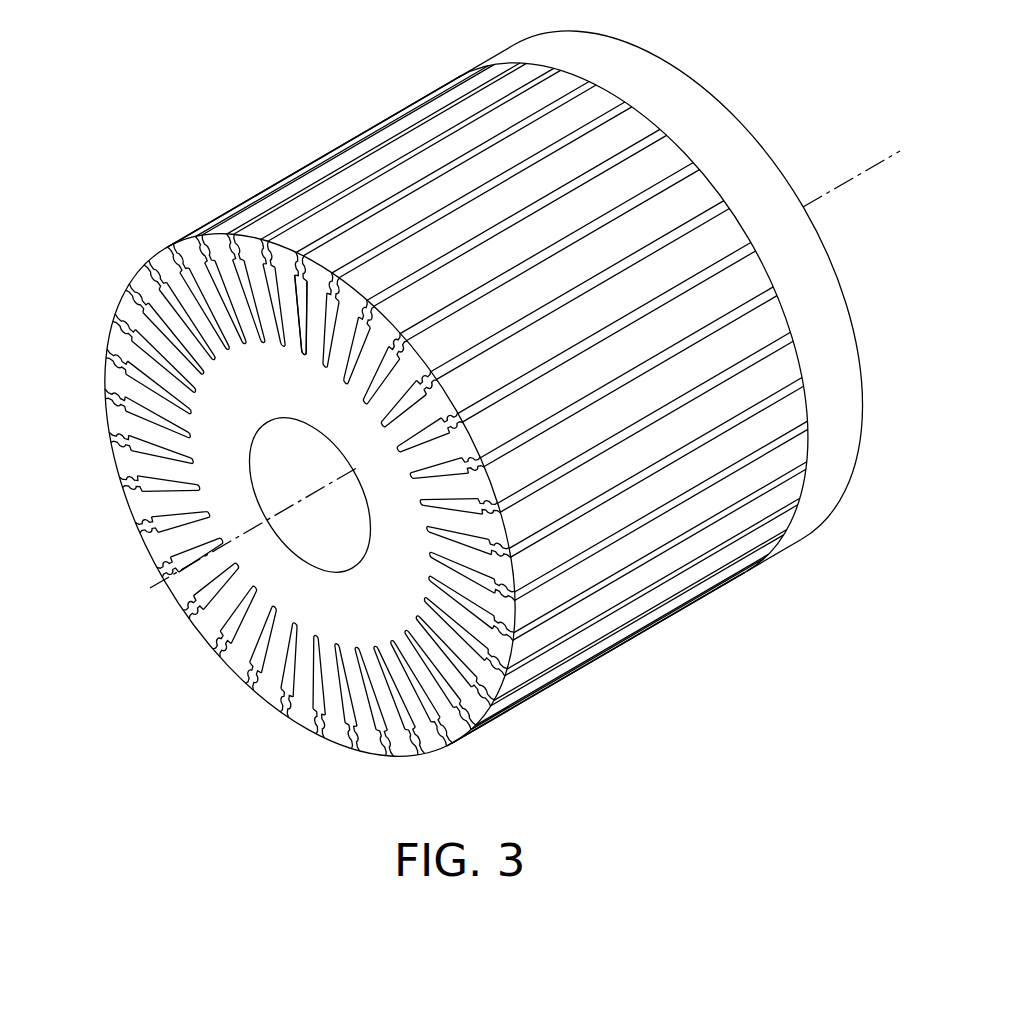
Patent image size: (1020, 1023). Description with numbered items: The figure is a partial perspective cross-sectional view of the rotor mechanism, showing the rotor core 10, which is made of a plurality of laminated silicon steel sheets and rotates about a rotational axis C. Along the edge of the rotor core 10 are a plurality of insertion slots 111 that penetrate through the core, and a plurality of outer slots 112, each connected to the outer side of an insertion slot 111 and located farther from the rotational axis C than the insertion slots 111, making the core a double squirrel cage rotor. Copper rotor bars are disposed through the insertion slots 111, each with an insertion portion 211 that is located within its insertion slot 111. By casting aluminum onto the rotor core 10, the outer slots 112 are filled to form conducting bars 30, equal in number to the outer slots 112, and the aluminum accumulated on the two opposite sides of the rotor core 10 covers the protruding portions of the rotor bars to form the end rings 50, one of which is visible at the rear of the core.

The rotor core 10 is at (456, 413).
The conducting bar 30 is at (248, 238).
The end ring 50 is at (838, 467).
The insertion slot 111 is at (189, 295).
The outer slot 112 is at (302, 255).
The insertion portion 211 is at (302, 310).
The rotational axis C is at (152, 588).